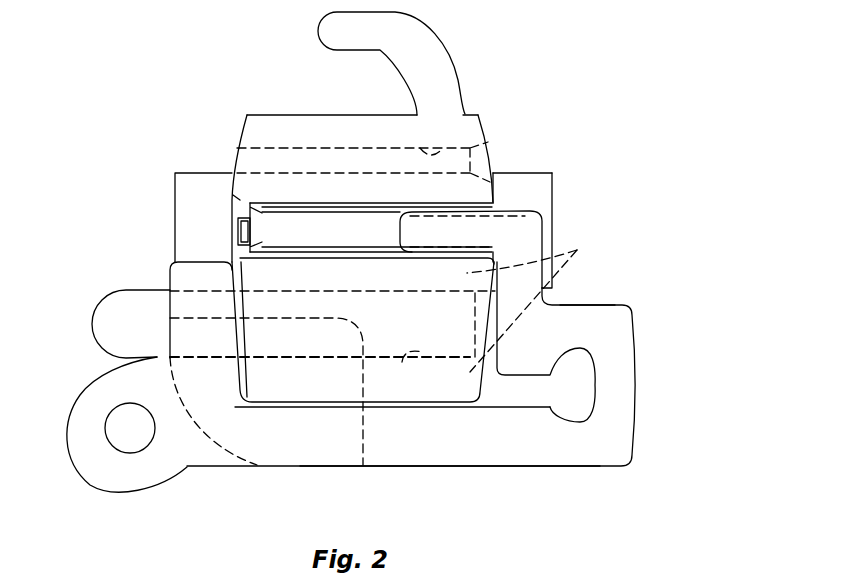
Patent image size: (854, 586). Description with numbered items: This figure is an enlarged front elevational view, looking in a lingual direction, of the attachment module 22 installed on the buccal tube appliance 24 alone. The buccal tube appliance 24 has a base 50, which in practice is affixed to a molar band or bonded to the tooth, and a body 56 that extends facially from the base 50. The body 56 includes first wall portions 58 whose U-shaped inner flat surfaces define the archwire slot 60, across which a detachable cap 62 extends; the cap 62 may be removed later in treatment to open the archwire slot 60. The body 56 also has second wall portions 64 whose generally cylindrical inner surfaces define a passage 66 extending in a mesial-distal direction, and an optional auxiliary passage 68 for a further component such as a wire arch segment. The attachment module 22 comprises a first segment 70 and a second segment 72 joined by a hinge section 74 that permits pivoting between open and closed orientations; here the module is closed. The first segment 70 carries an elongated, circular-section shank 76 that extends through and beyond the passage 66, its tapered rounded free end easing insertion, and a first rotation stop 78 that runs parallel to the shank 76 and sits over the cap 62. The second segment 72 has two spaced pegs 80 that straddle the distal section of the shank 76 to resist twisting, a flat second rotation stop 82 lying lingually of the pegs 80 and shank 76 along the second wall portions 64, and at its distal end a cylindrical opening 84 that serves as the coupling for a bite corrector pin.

The attachment module 22 is at (650, 325).
The buccal tube appliance 24 is at (485, 115).
The base 50 is at (523, 187).
The body 56 is at (245, 116).
The first wall portions 58 is at (258, 185).
The archwire slot 60 is at (250, 232).
The cap 62 is at (337, 228).
The second wall portions 64 is at (539, 301).
The passage 66 is at (400, 357).
The auxiliary passage 68 is at (432, 150).
The first segment 70 is at (596, 305).
The second segment 72 is at (507, 469).
The hinge section 74 is at (613, 388).
The shank 76 is at (112, 328).
The first rotation stop 78 is at (457, 228).
The pegs 80 is at (197, 276).
The second rotation stop 82 is at (295, 380).
The cylindrical opening 84 is at (110, 438).